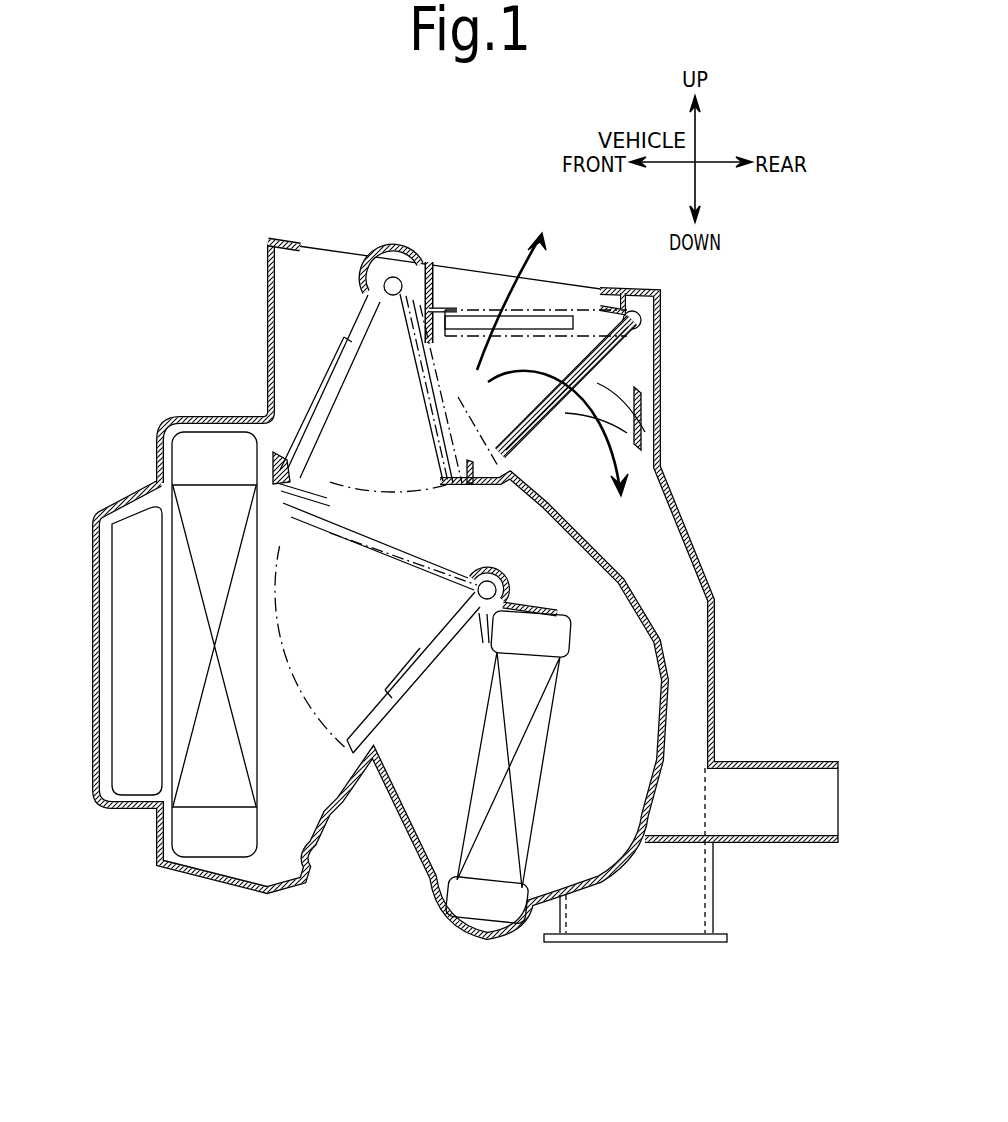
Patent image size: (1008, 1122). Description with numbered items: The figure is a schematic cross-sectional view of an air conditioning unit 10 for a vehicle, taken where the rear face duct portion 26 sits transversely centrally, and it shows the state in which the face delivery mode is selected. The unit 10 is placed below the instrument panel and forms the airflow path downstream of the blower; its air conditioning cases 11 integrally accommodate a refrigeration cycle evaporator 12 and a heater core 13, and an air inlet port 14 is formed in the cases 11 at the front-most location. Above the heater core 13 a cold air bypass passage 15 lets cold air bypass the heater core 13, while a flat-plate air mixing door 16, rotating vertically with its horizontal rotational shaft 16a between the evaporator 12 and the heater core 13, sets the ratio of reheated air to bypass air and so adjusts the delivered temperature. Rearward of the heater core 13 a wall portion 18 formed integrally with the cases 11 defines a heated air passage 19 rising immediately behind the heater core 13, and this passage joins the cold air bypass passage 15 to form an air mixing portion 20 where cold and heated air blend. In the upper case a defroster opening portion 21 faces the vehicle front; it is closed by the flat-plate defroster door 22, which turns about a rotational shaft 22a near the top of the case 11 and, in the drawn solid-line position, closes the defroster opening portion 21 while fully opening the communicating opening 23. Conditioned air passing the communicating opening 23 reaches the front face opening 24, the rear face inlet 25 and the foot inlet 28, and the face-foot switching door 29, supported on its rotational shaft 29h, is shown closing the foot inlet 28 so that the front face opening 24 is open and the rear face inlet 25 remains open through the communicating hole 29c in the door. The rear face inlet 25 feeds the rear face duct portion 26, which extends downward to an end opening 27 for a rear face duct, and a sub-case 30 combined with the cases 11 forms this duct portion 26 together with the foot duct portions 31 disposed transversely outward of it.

The air conditioning unit 10 is at (242, 212).
The air conditioning case 11 is at (267, 303).
The evaporator 12 is at (198, 799).
The heater core 13 is at (476, 882).
The air inlet port 14 is at (116, 654).
The cold air bypass passage 15 is at (391, 529).
The air mixing door 16 is at (393, 713).
The rotational shaft 16a is at (492, 590).
The wall portion 18 is at (661, 736).
The heated air passage 19 is at (558, 814).
The air mixing portion 20 is at (446, 514).
The defroster opening portion 21 is at (333, 258).
The defroster door 22 is at (337, 368).
The rotational shaft 22a is at (405, 262).
The communicating opening 23 is at (456, 407).
The front face opening 24 is at (488, 283).
The rear face inlet 25 is at (640, 372).
The rear face duct portion 26 is at (631, 564).
The end opening 27 is at (788, 825).
The foot inlet 28 is at (543, 453).
The face-foot switching door 29 is at (530, 460).
The communicating hole 29c is at (572, 375).
The rotational shaft 29h is at (645, 318).
The sub-case 30 is at (699, 561).
The foot duct portion 31 is at (620, 899).